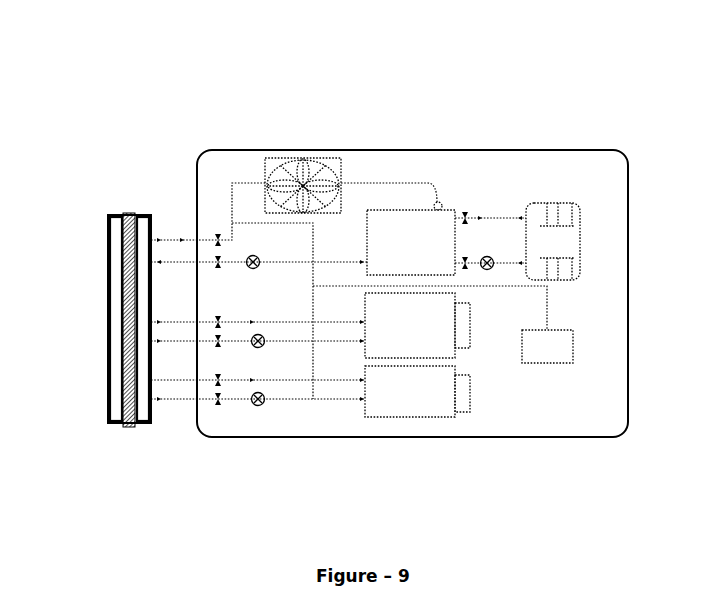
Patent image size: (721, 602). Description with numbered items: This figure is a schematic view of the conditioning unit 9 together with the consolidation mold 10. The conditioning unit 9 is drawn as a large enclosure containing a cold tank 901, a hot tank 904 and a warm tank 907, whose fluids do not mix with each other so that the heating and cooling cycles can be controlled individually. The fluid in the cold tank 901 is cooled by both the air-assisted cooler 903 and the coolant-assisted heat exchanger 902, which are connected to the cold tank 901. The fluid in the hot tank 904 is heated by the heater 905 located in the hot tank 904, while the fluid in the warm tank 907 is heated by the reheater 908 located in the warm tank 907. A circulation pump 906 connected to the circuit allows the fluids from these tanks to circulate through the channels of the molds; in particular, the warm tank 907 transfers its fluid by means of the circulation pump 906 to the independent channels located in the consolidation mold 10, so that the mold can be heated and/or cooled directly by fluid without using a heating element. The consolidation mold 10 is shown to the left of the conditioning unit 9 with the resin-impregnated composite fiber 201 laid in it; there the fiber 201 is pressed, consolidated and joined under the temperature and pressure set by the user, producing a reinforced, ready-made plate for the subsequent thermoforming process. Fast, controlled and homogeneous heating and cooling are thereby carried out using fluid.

The conditioning unit 9 is at (108, 141).
The consolidation mold 10 is at (115, 307).
The resin-impregnated composite fiber 201 is at (127, 213).
The cold tank 901 is at (415, 212).
The heat exchanger 902 is at (555, 218).
The cooler 903 is at (262, 164).
The hot tank 904 is at (435, 320).
The heater 905 is at (462, 320).
The circulation pump 906 is at (563, 343).
The warm tank 907 is at (427, 398).
The reheater 908 is at (462, 398).